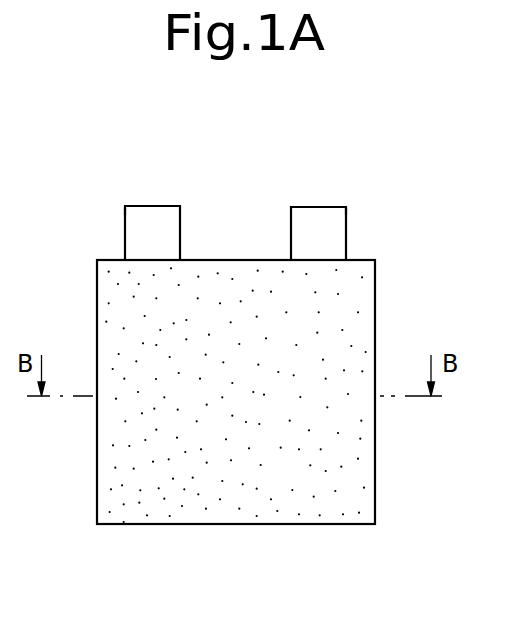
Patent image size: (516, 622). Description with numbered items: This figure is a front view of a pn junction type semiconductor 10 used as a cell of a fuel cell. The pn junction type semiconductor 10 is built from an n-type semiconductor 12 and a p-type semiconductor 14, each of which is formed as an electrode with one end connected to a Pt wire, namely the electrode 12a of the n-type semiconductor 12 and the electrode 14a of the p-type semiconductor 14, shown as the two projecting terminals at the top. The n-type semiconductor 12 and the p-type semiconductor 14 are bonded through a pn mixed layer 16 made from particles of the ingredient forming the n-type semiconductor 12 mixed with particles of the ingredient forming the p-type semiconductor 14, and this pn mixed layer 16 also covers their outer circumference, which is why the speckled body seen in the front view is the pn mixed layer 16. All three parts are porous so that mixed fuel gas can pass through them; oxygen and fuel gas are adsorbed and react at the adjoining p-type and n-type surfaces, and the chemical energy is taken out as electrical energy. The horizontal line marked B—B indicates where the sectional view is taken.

The pn junction type semiconductor 10 is at (415, 248).
The n-type semiconductor 12 is at (146, 170).
The electrode 12a is at (128, 215).
The p-type semiconductor 14 is at (313, 172).
The electrode 14a is at (333, 210).
The pn mixed layer 16 is at (215, 518).